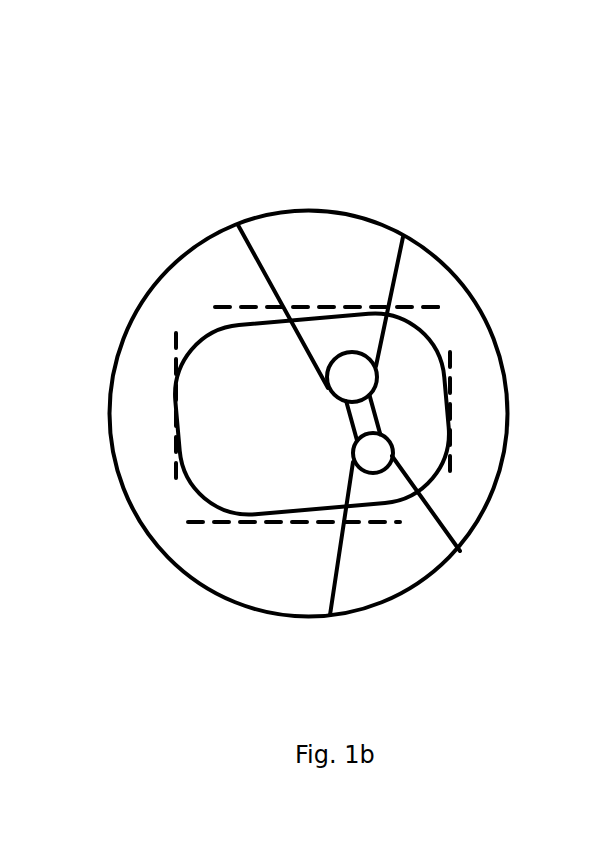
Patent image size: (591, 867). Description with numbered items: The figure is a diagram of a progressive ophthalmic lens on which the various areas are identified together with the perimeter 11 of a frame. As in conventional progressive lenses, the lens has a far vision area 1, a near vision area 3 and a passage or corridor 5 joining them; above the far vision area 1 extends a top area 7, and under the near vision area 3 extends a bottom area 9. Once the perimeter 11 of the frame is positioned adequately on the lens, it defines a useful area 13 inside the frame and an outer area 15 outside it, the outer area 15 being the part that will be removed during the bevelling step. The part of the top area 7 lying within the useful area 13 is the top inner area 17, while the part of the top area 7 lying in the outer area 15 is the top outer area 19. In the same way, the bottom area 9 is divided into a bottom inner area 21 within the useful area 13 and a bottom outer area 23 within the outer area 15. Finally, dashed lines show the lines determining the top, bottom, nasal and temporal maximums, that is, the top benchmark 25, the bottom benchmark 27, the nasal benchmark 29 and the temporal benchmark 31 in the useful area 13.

The far vision area 1 is at (353, 378).
The near vision area 3 is at (375, 457).
The passage or corridor 5 is at (363, 425).
The top area 7 is at (353, 245).
The bottom area 9 is at (364, 575).
The perimeter of a frame 11 is at (210, 320).
The useful area 13 is at (222, 458).
The outer area 15 is at (222, 560).
The top inner area 17 is at (276, 231).
The top outer area 19 is at (320, 237).
The bottom inner area 21 is at (387, 483).
The bottom outer area 23 is at (441, 569).
The top benchmark 25 is at (415, 307).
The bottom benchmark 27 is at (303, 525).
The nasal benchmark 29 is at (453, 470).
The temporal benchmark 31 is at (175, 482).